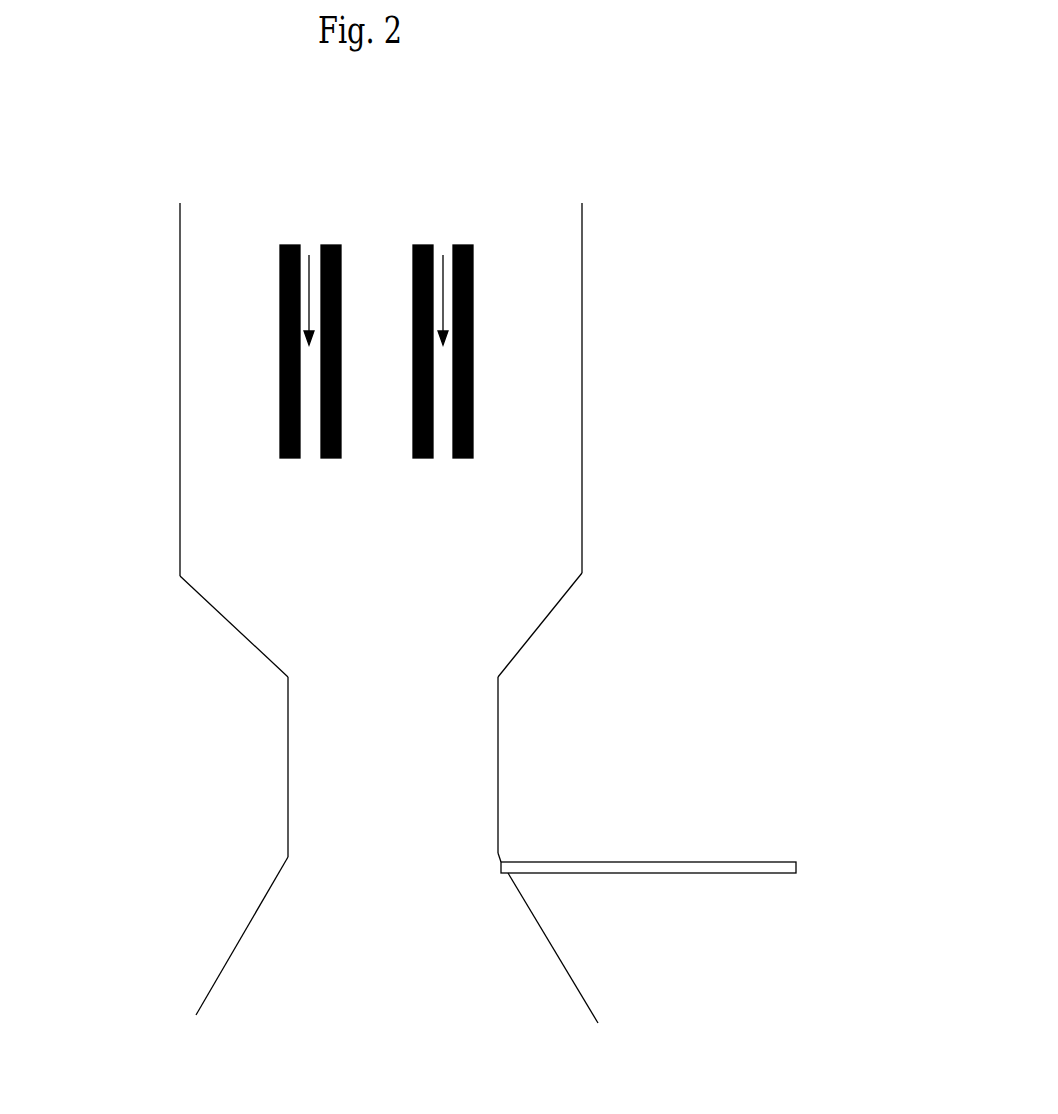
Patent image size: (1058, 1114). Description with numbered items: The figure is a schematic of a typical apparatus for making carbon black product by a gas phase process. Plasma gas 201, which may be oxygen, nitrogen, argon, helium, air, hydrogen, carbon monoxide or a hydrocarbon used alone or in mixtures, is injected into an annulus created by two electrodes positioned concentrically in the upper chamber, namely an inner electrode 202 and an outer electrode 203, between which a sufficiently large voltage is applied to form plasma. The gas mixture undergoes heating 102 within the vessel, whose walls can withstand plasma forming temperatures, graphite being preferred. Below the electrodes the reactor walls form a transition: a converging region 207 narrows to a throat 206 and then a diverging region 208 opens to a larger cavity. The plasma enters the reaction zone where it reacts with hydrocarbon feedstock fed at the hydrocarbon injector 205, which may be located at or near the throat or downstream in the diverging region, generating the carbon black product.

The heating 102 is at (451, 389).
The plasma gas 201 is at (436, 224).
The inner electrode 202 is at (342, 465).
The outer electrode 203 is at (261, 282).
The hydrocarbon injector 205 is at (647, 825).
The throat 206 is at (271, 769).
The converging region 207 is at (222, 639).
The diverging region 208 is at (219, 938).